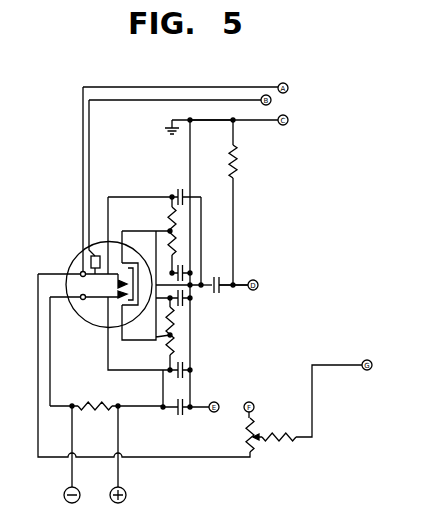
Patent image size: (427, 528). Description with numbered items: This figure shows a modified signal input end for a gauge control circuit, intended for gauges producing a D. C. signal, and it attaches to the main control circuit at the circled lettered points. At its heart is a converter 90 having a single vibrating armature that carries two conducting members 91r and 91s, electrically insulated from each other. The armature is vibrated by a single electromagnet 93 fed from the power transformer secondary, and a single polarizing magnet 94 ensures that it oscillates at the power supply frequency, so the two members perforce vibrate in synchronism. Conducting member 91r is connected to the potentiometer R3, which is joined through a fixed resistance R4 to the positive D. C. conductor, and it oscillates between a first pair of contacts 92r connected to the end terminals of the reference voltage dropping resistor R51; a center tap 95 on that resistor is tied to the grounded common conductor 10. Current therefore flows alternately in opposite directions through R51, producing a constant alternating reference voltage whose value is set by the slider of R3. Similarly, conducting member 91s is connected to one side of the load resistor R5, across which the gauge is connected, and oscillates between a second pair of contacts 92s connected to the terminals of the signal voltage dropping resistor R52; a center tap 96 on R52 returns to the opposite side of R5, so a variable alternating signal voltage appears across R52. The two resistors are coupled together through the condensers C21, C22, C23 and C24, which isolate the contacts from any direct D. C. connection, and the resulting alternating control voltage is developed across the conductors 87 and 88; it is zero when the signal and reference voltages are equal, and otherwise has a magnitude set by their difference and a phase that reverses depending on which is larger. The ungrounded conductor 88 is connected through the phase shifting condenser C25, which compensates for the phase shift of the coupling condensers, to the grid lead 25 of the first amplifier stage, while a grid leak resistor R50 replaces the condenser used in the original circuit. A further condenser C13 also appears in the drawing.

The grounded common conductor 10 is at (198, 122).
The grid lead 25 is at (237, 283).
The conductor 87 is at (194, 283).
The conductor 88 is at (202, 214).
The converter 90 is at (68, 298).
The conducting member 91r is at (82, 271).
The conducting member 91s is at (82, 300).
The first pair of contacts 92r is at (120, 268).
The second pair of contacts 92s is at (117, 299).
The electromagnet 93 is at (96, 255).
The polarizing magnet 94 is at (137, 307).
The center tap 95 is at (168, 231).
The center tap 96 is at (156, 351).
The grid leak resistor R50 is at (238, 165).
The reference voltage dropping resistor R51 is at (172, 225).
The signal voltage dropping resistor R52 is at (176, 340).
The load resistor R5 is at (95, 409).
The potentiometer R3 is at (246, 436).
The fixed resistance R4 is at (279, 432).
The condenser C21 is at (182, 190).
The condenser C22 is at (186, 266).
The condenser C23 is at (186, 305).
The condenser C24 is at (188, 367).
The phase shifting condenser C25 is at (226, 294).
The capacitor C13 is at (176, 411).